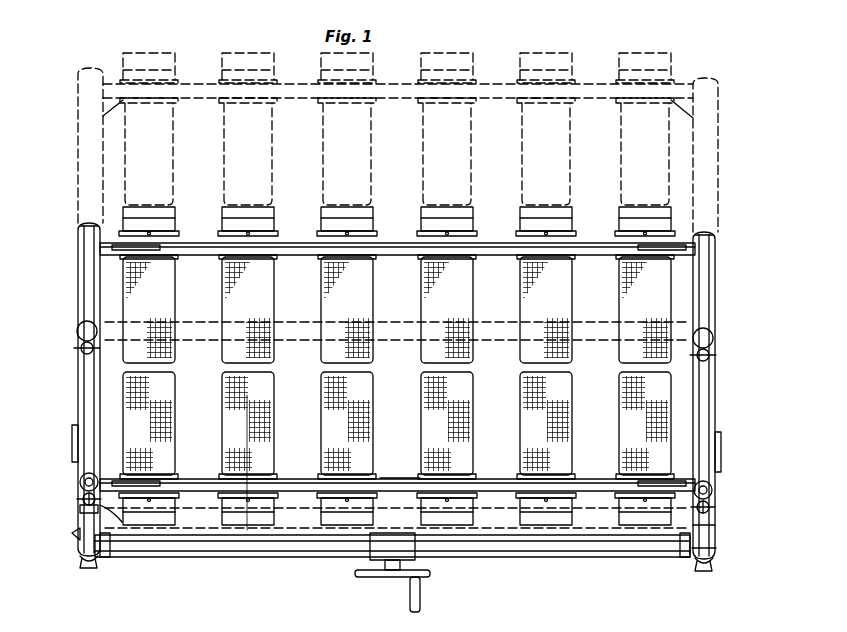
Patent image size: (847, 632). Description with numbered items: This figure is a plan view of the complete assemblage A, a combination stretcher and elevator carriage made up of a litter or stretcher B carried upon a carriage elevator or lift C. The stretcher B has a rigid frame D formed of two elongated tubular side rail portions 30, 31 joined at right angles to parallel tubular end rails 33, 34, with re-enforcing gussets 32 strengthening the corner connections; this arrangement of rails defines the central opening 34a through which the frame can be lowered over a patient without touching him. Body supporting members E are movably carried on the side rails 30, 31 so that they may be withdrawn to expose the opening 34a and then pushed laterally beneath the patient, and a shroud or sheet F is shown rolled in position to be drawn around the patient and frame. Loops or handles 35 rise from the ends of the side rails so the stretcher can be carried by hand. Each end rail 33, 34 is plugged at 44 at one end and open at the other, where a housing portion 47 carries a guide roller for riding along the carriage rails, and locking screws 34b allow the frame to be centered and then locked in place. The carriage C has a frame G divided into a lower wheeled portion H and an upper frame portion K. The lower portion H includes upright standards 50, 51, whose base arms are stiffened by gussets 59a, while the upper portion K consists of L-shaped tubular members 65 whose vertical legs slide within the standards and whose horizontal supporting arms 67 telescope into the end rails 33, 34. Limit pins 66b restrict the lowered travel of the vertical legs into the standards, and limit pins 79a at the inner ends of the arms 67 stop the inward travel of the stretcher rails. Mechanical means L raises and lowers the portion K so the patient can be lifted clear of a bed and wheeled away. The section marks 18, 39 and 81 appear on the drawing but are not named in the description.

The section line 18 is at (247, 363).
The side rail portion 30 is at (205, 469).
The side rail portion 31 is at (202, 246).
The re-enforcing gusset 32 is at (121, 262).
The end rail 33 is at (88, 375).
The end rail 34 is at (706, 388).
The opening 34a is at (398, 480).
The locking screw 34b is at (743, 471).
The loop or handle 35 is at (160, 243).
The slot 39 is at (446, 232).
The plug 44 is at (85, 224).
The housing portion 47 is at (79, 500).
The standard 50 is at (79, 559).
The standard 51 is at (716, 558).
The gusset 59a is at (108, 545).
The L-shaped member 65 is at (74, 535).
The limit pin 66b is at (703, 562).
The horizontal supporting arm or rail 67 is at (84, 518).
The limit pin 79a is at (104, 513).
The plate 81 is at (73, 452).
The assemblage A is at (70, 411).
The litter or stretcher B is at (706, 279).
The carriage elevator or lift C is at (156, 560).
The rigid frame D is at (293, 482).
The body supporting member E is at (420, 172).
The shroud or sheet F is at (510, 535).
The frame G is at (610, 557).
The lower wheeled portion H is at (266, 558).
The upper frame portion K is at (716, 531).
The mechanical means L is at (430, 580).